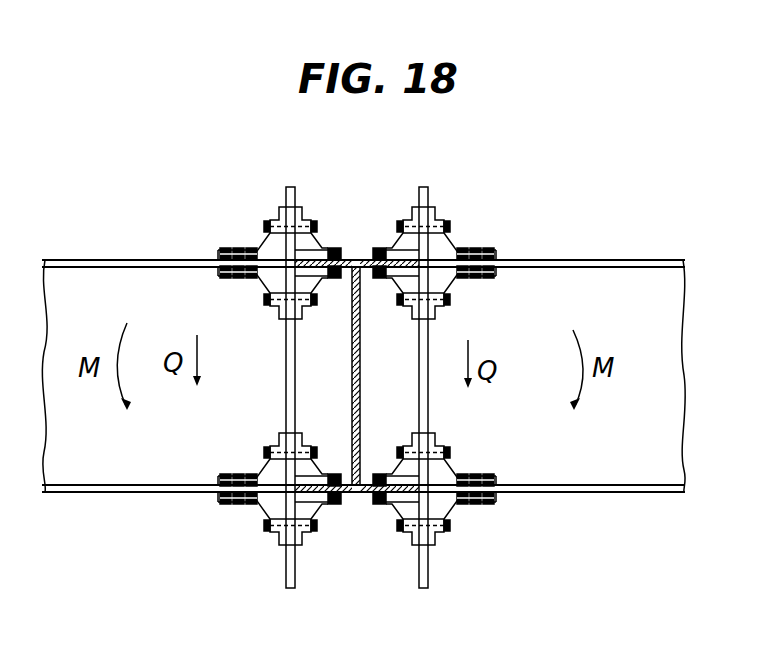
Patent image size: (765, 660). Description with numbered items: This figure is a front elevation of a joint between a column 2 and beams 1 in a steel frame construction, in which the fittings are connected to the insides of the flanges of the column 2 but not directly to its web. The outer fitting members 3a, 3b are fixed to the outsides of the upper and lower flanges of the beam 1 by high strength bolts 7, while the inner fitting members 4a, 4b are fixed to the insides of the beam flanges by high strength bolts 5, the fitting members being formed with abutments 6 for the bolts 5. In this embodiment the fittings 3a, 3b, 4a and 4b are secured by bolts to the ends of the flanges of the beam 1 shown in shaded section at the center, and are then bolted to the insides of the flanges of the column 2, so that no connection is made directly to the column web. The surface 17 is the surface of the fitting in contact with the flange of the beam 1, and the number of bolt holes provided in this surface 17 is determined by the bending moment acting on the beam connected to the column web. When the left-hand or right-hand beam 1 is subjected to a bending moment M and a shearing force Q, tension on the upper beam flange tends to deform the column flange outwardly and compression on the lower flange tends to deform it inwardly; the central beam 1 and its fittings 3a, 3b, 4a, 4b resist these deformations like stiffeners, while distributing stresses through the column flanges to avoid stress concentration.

The beam 1 is at (136, 276).
The column 2 is at (405, 199).
The outer fitting member 3a is at (272, 240).
The outer fitting member 3b is at (283, 513).
The inner fitting member 4a is at (265, 291).
The inner fitting member 4b is at (300, 473).
The high strength bolt 5 is at (323, 229).
The abutment 6 is at (290, 207).
The high strength bolt 7 is at (228, 249).
The surface of the fitting in contact with the flange of the beam 17 is at (301, 493).